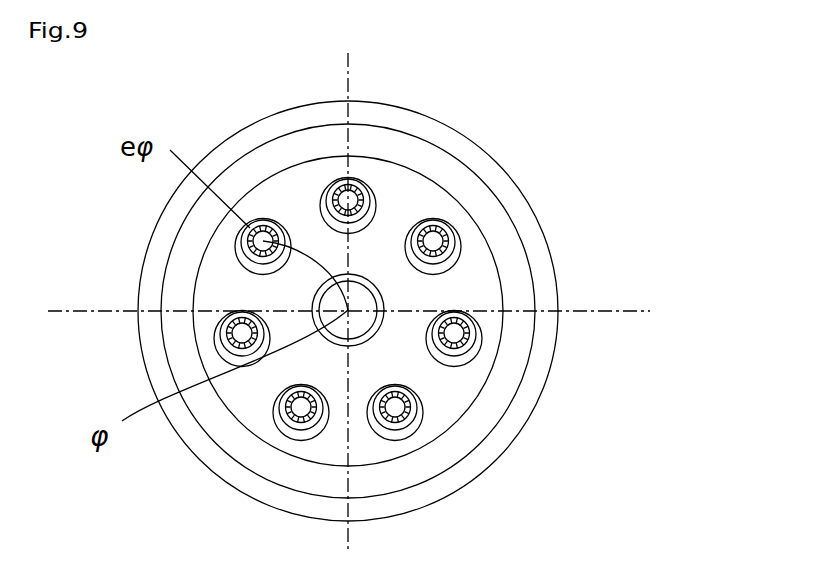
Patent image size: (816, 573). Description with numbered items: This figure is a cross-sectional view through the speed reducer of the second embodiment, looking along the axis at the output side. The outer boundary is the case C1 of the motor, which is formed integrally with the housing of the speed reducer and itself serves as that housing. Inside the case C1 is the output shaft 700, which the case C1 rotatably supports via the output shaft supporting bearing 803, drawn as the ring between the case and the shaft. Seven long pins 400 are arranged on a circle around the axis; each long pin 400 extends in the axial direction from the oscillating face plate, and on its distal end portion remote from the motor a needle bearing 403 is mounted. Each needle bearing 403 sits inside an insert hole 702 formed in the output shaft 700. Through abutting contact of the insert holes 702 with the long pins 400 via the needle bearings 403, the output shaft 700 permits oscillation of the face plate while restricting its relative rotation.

The long pin 400 is at (437, 237).
The needle bearing 403 is at (457, 262).
The insert hole 702 is at (477, 337).
The output shaft 700 is at (424, 410).
The output shaft supporting bearing 803 is at (232, 441).
The case C1 is at (152, 255).